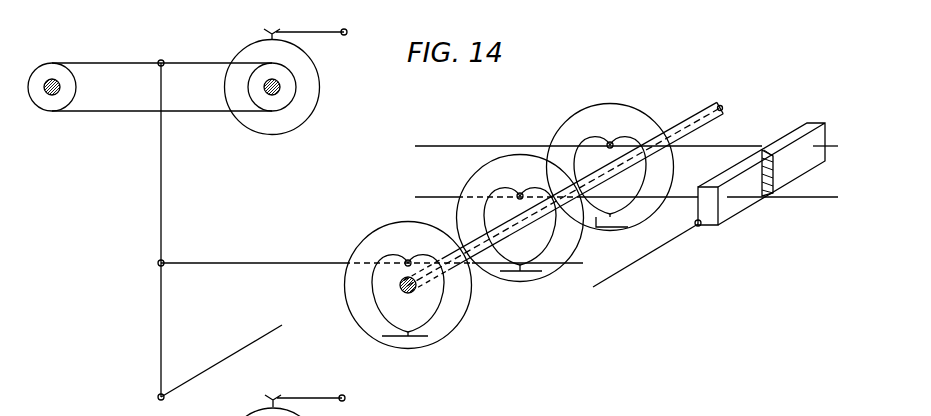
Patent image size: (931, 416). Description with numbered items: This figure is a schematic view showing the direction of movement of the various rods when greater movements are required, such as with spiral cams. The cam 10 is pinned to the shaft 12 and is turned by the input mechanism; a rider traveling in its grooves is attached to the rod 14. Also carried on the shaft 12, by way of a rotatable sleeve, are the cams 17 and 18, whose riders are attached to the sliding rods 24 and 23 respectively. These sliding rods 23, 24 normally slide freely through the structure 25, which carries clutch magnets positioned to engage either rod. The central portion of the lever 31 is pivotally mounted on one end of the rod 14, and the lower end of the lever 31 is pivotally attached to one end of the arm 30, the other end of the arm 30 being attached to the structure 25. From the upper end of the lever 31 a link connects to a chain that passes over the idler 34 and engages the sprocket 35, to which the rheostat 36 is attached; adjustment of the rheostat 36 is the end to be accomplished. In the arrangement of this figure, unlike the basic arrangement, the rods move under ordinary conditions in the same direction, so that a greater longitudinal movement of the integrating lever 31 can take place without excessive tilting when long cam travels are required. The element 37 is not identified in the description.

The cam 10 is at (449, 333).
The shaft 12 is at (690, 133).
The rod 14 is at (258, 262).
The cam 17 is at (533, 283).
The cam 18 is at (604, 232).
The sliding rod 23 is at (737, 147).
The sliding rod 24 is at (672, 196).
The structure 25 is at (812, 123).
The arm 30 is at (215, 365).
The lever 31 is at (159, 213).
The idler 34 is at (52, 112).
The sprocket 35 is at (277, 112).
The rheostat 36 is at (315, 68).
The lower pulley 37 is at (335, 410).